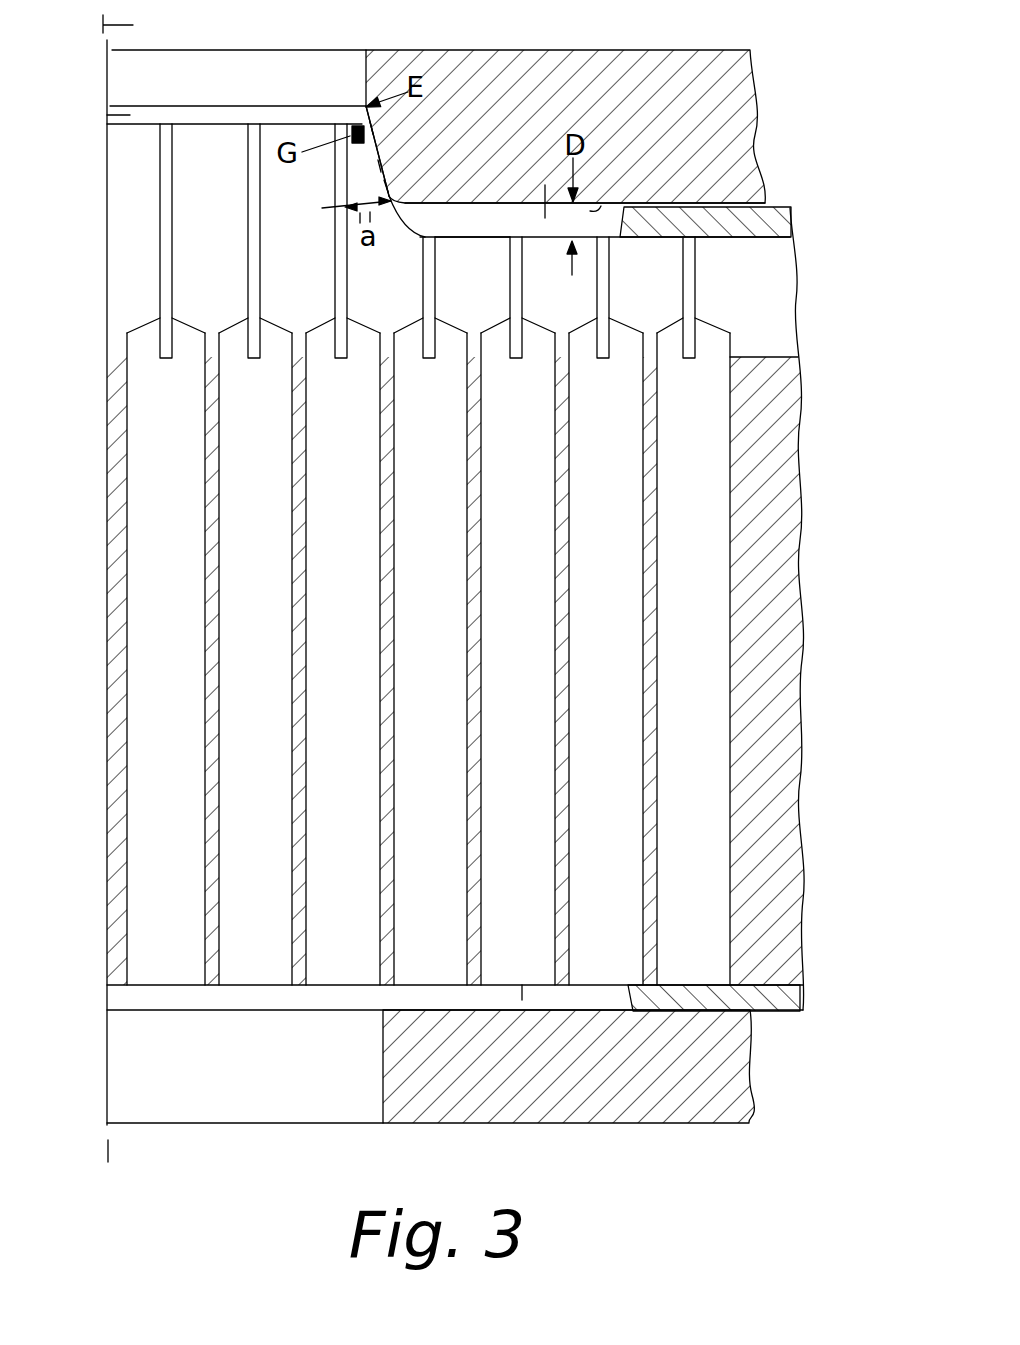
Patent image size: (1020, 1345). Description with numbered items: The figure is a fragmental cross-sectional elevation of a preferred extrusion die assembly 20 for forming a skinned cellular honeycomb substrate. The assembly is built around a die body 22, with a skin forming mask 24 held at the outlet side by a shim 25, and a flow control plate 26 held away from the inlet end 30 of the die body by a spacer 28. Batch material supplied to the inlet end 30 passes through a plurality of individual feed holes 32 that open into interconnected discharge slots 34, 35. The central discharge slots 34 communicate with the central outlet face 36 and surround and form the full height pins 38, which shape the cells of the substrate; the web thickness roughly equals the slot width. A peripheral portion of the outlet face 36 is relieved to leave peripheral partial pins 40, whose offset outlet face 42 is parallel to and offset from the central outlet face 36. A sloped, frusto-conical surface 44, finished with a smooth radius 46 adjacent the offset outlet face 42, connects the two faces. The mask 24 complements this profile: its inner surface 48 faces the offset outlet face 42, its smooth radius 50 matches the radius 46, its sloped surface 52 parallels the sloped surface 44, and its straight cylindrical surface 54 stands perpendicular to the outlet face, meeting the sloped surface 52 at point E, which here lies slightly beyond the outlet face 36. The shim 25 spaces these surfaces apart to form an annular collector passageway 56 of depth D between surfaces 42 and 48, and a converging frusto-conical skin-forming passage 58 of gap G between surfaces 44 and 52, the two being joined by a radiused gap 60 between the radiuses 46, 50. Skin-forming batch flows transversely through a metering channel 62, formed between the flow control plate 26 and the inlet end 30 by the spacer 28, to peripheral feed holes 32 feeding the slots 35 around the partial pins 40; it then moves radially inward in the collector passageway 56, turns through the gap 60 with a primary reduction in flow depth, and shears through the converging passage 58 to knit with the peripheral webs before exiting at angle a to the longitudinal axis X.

The extrusion die assembly 20 is at (817, 398).
The die body 22 is at (797, 604).
The skin forming mask 24 is at (662, 50).
The shim 25 is at (785, 218).
The flow control plate 26 is at (744, 1072).
The spacer 28 is at (792, 996).
The inlet end 30 is at (253, 988).
The feed holes 32 is at (323, 500).
The discharge slots 34 is at (253, 127).
The discharge slots 35 is at (430, 307).
The central outlet face 36 is at (128, 106).
The pins 38 is at (150, 268).
The peripheral partial pins 40 is at (613, 300).
The offset outlet face 42 is at (527, 237).
The sloped surface 44 is at (374, 158).
The smooth radius 46 is at (401, 230).
The inner surface 48 is at (601, 206).
The smooth radius 50 is at (398, 182).
The sloped surface 52 is at (391, 124).
The straight cylindrical surface 54 is at (366, 83).
The collector passageway 56 is at (545, 187).
The skin-forming passage 58 is at (383, 170).
The radiused gap 60 is at (433, 203).
The metering channel 62 is at (523, 985).